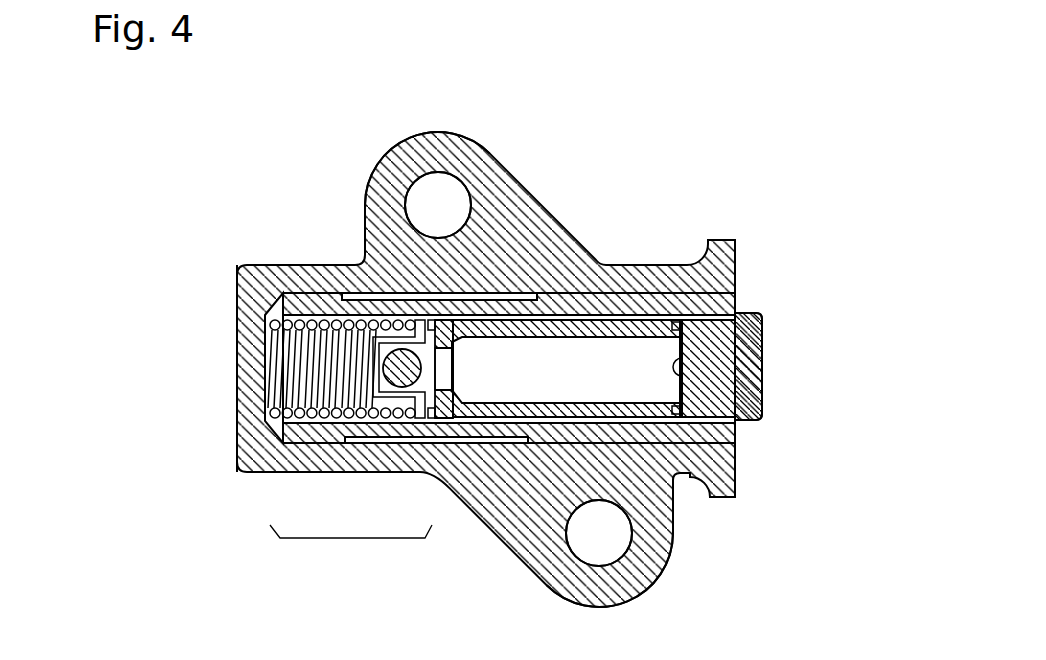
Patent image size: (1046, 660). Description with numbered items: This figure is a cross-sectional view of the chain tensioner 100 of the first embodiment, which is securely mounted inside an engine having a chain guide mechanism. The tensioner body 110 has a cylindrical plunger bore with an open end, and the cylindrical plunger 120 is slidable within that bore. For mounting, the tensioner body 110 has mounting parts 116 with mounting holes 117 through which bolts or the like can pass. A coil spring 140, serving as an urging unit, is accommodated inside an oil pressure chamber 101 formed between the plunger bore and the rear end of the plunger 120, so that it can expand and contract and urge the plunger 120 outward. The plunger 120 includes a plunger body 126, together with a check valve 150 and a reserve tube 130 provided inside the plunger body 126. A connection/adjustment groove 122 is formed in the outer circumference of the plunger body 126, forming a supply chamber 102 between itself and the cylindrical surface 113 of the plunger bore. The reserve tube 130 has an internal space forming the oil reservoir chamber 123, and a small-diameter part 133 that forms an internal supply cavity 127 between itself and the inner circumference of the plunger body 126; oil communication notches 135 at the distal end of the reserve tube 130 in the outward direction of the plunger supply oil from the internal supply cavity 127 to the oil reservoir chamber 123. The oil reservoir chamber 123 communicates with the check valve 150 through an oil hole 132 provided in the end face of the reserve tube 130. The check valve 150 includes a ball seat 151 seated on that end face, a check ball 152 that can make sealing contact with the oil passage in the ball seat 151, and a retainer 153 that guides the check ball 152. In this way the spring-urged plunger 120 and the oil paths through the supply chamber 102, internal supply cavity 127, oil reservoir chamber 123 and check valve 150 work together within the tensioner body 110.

The chain tensioner 100 is at (150, 143).
The oil pressure chamber 101 is at (307, 372).
The supply chamber 102 is at (416, 297).
The tensioner body 110 is at (617, 263).
The cylindrical surface 113 is at (388, 289).
The mounting part 116 is at (470, 165).
The mounting hole 117 is at (424, 205).
The plunger 120 is at (774, 372).
The connection/adjustment groove 122 is at (363, 290).
The oil reservoir chamber 123 is at (582, 360).
The plunger body 126 is at (678, 447).
The internal supply cavity 127 is at (618, 421).
The reserve tube 130 is at (547, 330).
The oil hole 132 is at (450, 390).
The small-diameter part 133 is at (587, 413).
The oil communication notch 135 is at (693, 407).
The coil spring 140 is at (263, 430).
The check valve 150 is at (361, 445).
The ball seat 151 is at (437, 422).
The check ball 152 is at (403, 380).
The retainer 153 is at (373, 403).